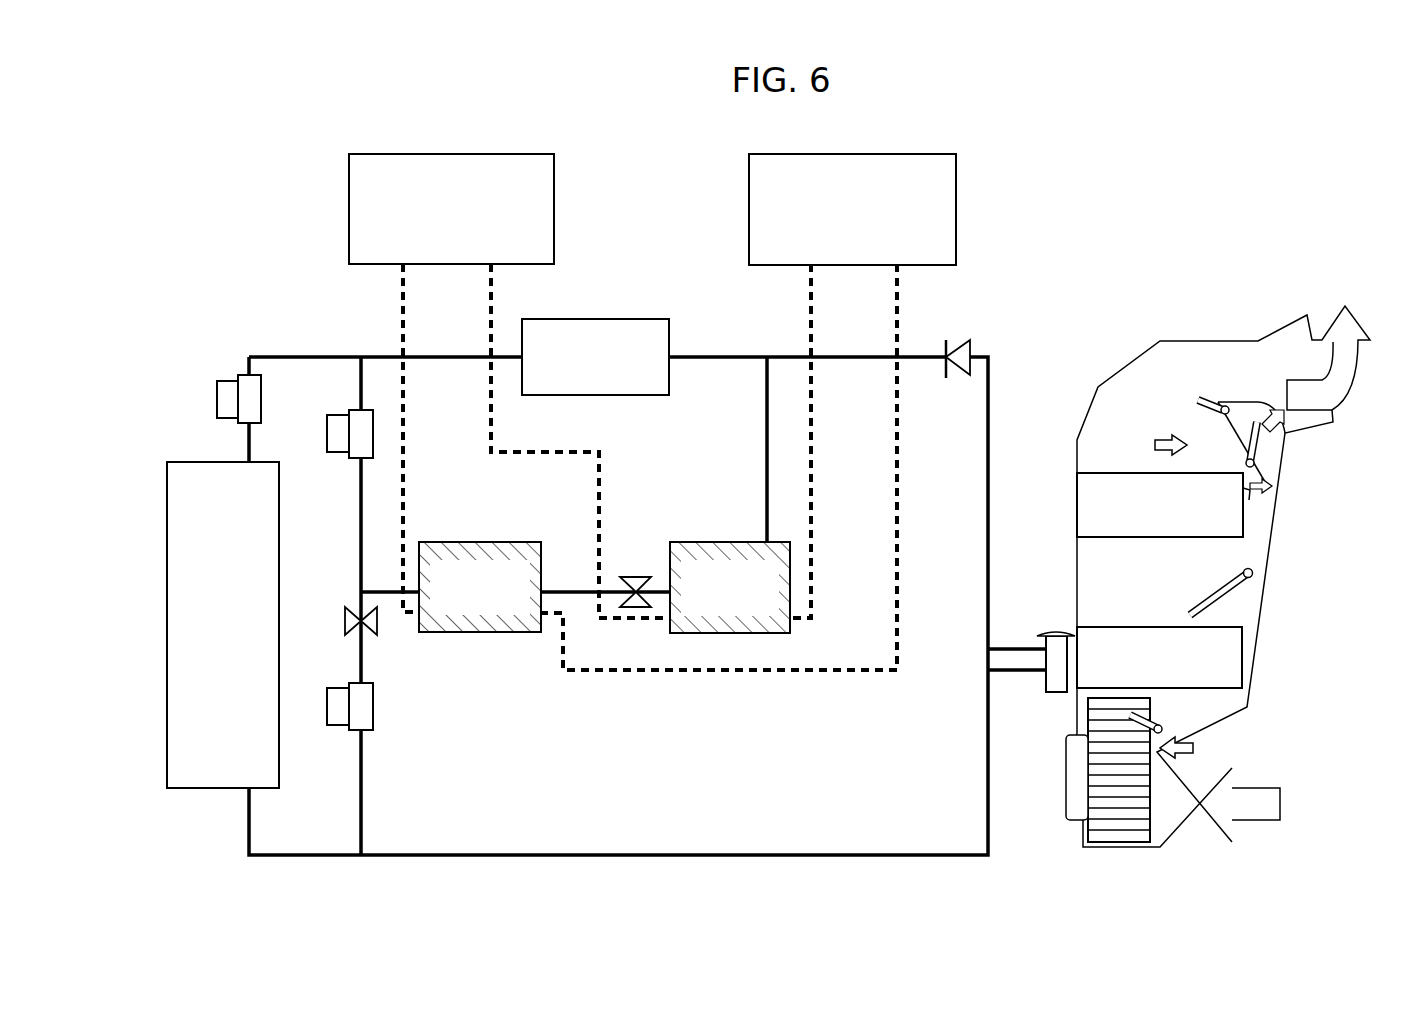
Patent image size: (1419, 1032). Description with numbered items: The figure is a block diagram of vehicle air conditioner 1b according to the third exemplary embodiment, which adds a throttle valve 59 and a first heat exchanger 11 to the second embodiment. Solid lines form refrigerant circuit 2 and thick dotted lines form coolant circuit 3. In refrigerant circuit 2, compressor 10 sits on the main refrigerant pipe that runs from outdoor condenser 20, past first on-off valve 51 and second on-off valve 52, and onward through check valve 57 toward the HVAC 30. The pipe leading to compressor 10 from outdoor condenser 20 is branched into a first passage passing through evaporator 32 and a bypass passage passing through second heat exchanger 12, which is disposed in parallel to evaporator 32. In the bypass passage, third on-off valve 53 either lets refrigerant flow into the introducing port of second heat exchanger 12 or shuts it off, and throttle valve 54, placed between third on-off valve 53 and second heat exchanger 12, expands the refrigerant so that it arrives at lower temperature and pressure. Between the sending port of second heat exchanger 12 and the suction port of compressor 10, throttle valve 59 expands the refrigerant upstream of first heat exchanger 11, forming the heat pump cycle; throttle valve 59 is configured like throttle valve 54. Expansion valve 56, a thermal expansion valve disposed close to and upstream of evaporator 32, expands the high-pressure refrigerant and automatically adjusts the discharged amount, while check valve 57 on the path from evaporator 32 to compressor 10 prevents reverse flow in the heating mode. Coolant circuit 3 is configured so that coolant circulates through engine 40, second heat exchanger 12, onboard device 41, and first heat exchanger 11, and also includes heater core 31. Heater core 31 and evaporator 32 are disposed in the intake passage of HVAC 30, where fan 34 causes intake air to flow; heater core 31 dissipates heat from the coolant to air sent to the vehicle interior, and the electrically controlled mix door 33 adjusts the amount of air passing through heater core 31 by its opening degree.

The vehicle air conditioner 1b is at (1060, 192).
The refrigerant circuit 2 is at (289, 345).
The coolant circuit 3 is at (835, 672).
The compressor 10 is at (599, 319).
The first heat exchanger 11 is at (731, 542).
The second heat exchanger 12 is at (480, 542).
The outdoor condenser 20 is at (281, 503).
The HVAC 30 is at (1270, 466).
The heater core 31 is at (1245, 512).
The evaporator 32 is at (1244, 656).
The door 33 is at (1233, 594).
The fan 34 is at (1120, 834).
The engine 40 is at (556, 205).
The onboard device 41 is at (958, 205).
The first on-off valve 51 is at (234, 379).
The second on-off valve 52 is at (340, 413).
The third on-off valve 53 is at (375, 705).
The throttle valve 54 is at (345, 622).
The expansion valve 56 is at (1056, 633).
The check valve 57 is at (958, 341).
The throttle valve 59 is at (637, 578).